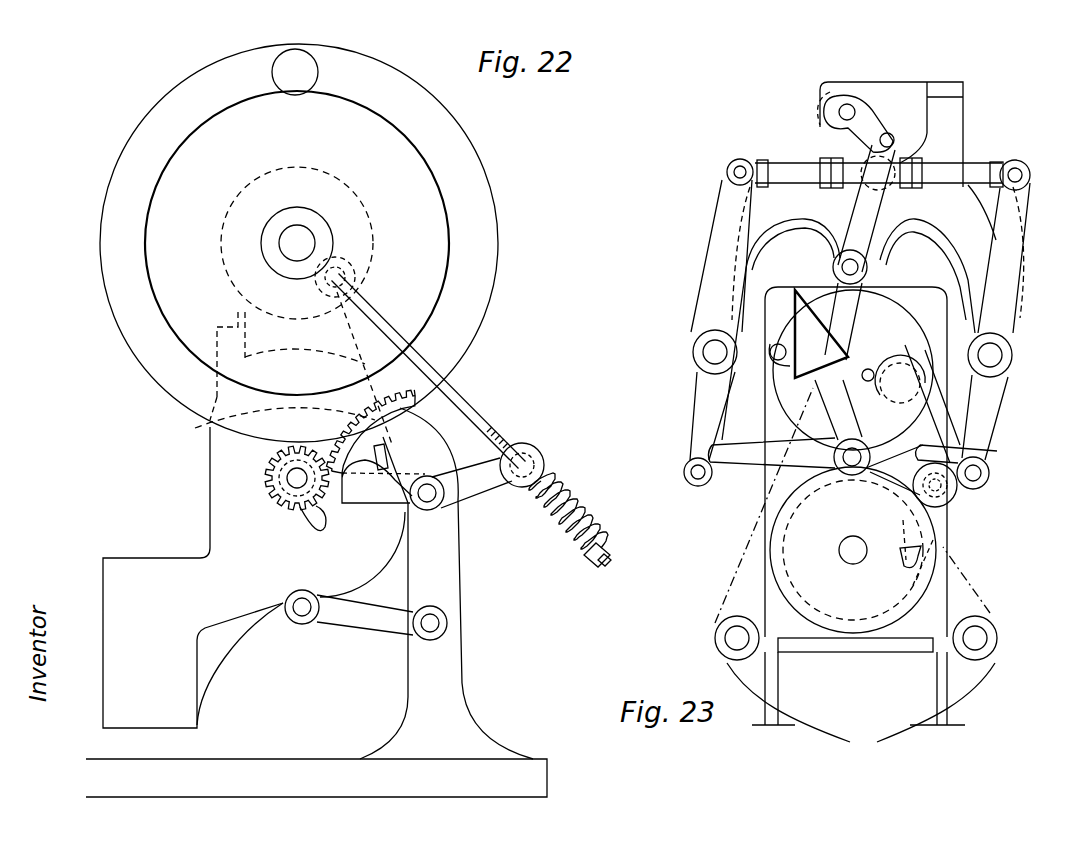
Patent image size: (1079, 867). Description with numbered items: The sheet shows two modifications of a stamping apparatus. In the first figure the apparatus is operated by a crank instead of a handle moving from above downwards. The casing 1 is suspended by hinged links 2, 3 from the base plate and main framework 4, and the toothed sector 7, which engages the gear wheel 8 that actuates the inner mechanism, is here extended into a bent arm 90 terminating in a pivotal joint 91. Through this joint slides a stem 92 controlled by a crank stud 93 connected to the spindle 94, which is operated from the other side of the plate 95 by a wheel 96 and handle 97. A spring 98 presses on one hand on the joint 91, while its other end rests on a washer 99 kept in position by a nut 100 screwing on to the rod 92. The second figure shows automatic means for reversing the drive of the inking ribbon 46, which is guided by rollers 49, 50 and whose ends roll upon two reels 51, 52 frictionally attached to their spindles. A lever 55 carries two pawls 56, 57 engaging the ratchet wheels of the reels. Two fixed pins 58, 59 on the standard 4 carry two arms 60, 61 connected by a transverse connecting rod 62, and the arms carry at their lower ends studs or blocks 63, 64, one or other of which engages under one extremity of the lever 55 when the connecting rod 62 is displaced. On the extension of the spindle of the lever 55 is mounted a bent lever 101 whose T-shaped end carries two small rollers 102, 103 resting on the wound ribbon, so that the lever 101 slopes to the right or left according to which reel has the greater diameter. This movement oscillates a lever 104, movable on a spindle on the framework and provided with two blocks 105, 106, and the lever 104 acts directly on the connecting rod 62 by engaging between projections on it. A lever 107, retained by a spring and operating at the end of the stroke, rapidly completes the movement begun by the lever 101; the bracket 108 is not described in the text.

In FIG. 22, the casing 1 is at (239, 520).
In FIG. 22, the hinged link 2 is at (376, 459).
In FIG. 22, the hinged link 3 is at (366, 615).
In FIG. 22, the base plate and main framework 4 is at (340, 337).
In FIG. 23, the base plate and main framework 4 is at (946, 123).
In FIG. 22, the toothed sector 7 is at (381, 457).
In FIG. 22, the gear wheel 8 is at (270, 480).
In FIG. 23, the inking ribbon 46 is at (752, 546).
In FIG. 23, the roller 49 is at (715, 640).
In FIG. 23, the roller 50 is at (997, 638).
In FIG. 23, the reel 51 is at (853, 370).
In FIG. 23, the reel 52 is at (853, 559).
In FIG. 23, the lever 55 is at (1005, 455).
In FIG. 23, the pawl 56 is at (945, 415).
In FIG. 23, the pawl 57 is at (935, 515).
In FIG. 23, the fixed pin 58 is at (1012, 355).
In FIG. 23, the fixed pin 59 is at (692, 352).
In FIG. 23, the arm 60 is at (996, 321).
In FIG. 23, the arm 61 is at (742, 222).
In FIG. 23, the transverse connecting rod 62 is at (878, 174).
In FIG. 23, the stud or block 63 is at (989, 473).
In FIG. 23, the stud or block 64 is at (684, 472).
In FIG. 22, the bent arm 90 is at (461, 484).
In FIG. 22, the pivotal joint 91 is at (536, 458).
In FIG. 22, the stem 92 is at (480, 420).
In FIG. 22, the crank stud 93 is at (338, 277).
In FIG. 22, the spindle 94 is at (297, 243).
In FIG. 22, the plate 95 is at (318, 222).
In FIG. 22, the wheel 96 is at (299, 243).
In FIG. 22, the handle 97 is at (295, 72).
In FIG. 22, the spring 98 is at (582, 502).
In FIG. 22, the washer 99 is at (612, 528).
In FIG. 22, the nut 100 is at (601, 562).
In FIG. 23, the bent lever 101 is at (797, 292).
In FIG. 23, the small roller 102 is at (900, 363).
In FIG. 23, the small roller 103 is at (950, 495).
In FIG. 23, the lever 104 is at (880, 203).
In FIG. 23, the block 105 is at (776, 344).
In FIG. 23, the block 106 is at (868, 369).
In FIG. 23, the lever 107 is at (826, 102).
In FIG. 23, the bracket 108 is at (890, 90).